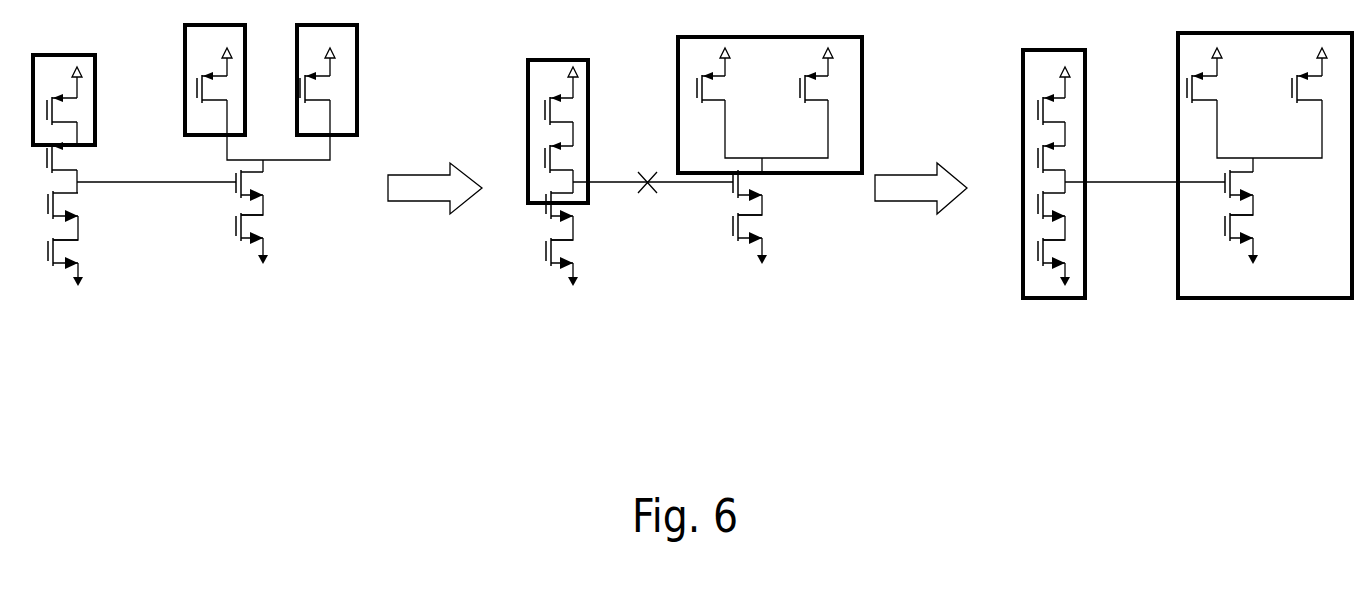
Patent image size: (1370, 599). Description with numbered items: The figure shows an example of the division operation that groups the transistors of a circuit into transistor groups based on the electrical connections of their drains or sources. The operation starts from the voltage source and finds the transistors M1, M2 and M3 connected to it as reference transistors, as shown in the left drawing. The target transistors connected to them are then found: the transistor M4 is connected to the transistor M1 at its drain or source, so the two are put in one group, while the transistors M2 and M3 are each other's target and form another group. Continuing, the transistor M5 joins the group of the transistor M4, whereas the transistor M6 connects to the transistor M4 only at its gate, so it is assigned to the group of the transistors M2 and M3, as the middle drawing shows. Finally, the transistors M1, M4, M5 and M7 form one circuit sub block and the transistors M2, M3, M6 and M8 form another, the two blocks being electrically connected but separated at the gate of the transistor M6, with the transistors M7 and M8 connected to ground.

The transistor M1 is at (336, 109).
The transistor M2 is at (481, 88).
The transistor M3 is at (346, 86).
The transistor M4 is at (336, 159).
The transistor M5 is at (336, 210).
The transistor M6 is at (518, 188).
The transistor M7 is at (585, 253).
The transistor M8 is at (766, 228).